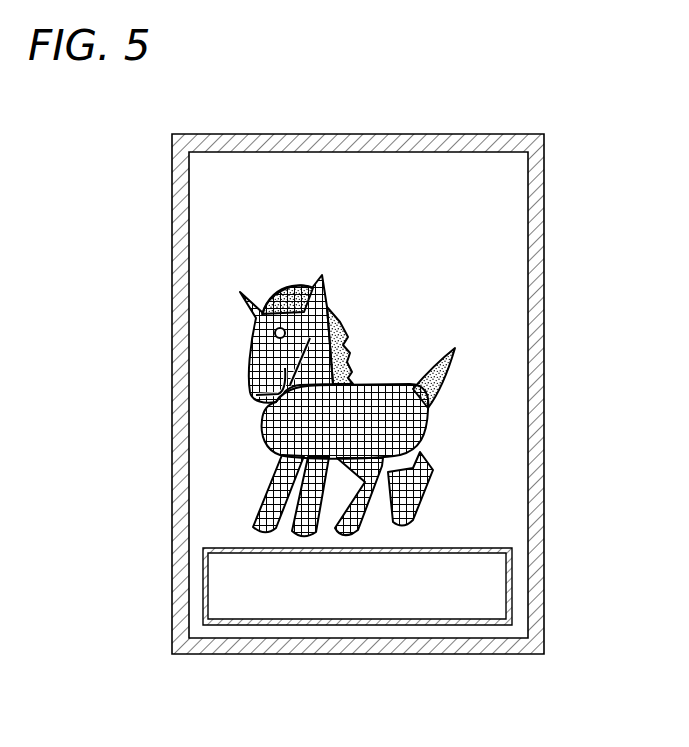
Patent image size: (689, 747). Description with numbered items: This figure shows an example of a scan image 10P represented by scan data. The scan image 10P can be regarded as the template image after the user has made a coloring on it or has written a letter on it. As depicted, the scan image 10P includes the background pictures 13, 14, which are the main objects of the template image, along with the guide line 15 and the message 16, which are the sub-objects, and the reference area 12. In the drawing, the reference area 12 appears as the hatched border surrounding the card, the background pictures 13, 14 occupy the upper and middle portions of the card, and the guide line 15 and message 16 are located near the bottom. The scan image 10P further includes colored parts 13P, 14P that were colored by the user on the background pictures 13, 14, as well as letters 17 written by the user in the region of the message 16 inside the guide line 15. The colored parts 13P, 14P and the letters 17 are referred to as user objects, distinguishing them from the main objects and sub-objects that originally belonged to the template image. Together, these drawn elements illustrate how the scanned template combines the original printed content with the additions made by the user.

The scan image 10P is at (460, 113).
The reference area 12 is at (340, 145).
The background picture 13 is at (472, 263).
The colored part 13P is at (480, 238).
The background picture 14 is at (455, 372).
The colored part 14P is at (430, 428).
The guide line 15 is at (508, 580).
The message 16 is at (385, 538).
The letters 17 is at (347, 615).